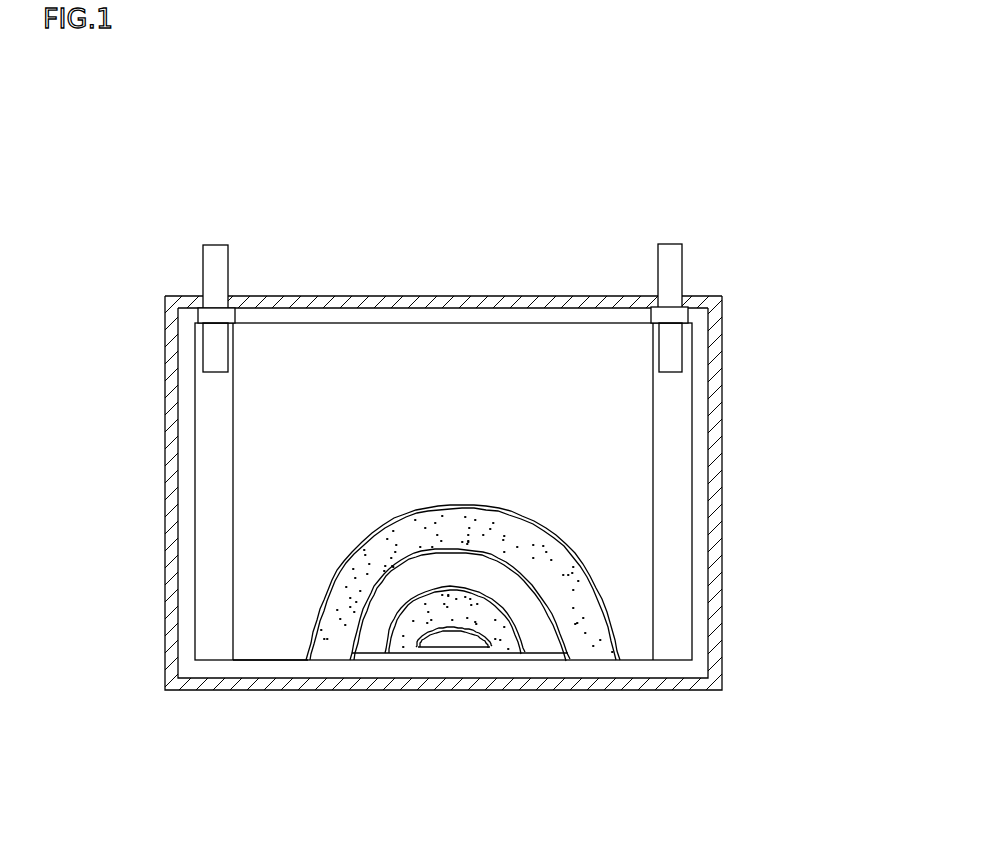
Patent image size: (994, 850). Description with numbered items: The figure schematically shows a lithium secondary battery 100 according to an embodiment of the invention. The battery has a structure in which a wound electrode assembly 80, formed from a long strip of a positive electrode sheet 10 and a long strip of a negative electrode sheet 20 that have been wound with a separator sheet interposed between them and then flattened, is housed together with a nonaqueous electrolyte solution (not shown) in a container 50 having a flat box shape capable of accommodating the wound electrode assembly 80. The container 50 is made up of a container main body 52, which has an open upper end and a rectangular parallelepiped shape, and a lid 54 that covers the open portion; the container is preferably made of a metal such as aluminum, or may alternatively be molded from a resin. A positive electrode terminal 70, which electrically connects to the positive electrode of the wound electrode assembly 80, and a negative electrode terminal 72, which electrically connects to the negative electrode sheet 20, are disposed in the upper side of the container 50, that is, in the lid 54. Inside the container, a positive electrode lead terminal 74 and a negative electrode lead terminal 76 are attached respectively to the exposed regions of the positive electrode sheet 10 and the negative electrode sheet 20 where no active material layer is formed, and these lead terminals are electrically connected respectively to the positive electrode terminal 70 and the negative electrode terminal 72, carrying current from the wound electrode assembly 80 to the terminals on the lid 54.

The lithium secondary battery 100 is at (717, 171).
The positive electrode sheet 10 is at (270, 638).
The negative electrode sheet 20 is at (373, 645).
The container 50 is at (722, 595).
The container main body 52 is at (722, 457).
The lid 54 is at (308, 302).
The positive electrode terminal 70 is at (213, 252).
The negative electrode terminal 72 is at (668, 260).
The positive electrode lead terminal 74 is at (212, 363).
The negative electrode lead terminal 76 is at (673, 362).
The wound electrode assembly 80 is at (362, 350).